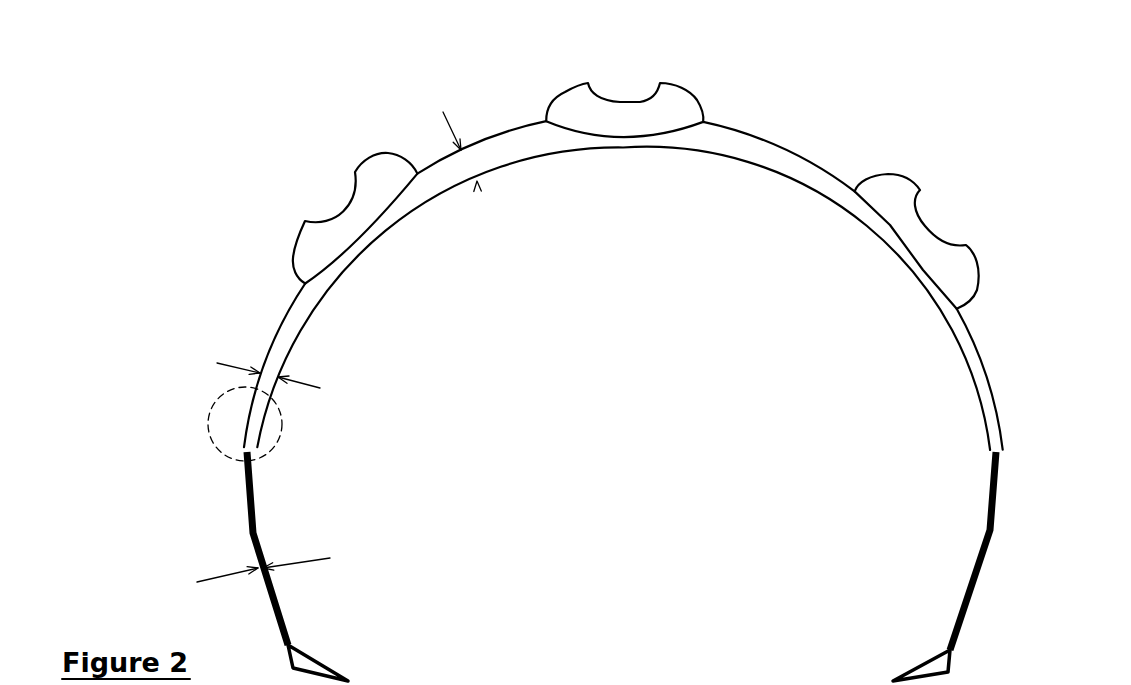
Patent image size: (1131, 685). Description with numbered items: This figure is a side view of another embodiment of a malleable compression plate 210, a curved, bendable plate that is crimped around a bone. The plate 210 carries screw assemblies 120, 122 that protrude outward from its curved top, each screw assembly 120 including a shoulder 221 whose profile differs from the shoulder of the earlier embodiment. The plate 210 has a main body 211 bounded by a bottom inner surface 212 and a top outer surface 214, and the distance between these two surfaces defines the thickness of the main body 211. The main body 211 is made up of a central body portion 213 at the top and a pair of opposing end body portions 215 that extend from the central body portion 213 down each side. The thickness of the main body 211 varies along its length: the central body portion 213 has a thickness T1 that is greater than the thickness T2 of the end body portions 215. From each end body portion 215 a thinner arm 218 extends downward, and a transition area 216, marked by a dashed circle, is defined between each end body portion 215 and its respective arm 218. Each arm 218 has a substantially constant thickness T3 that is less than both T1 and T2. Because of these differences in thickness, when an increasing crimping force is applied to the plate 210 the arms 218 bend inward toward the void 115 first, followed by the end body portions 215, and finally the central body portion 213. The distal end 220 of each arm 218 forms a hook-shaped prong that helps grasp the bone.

The malleable compression plate 210 is at (293, 112).
The screw assembly 120 is at (552, 104).
The cushion pad 122 is at (950, 217).
The shoulder 221 is at (982, 260).
The main body 211 is at (493, 157).
The bottom inner surface 212 is at (747, 162).
The central body portion 213 is at (740, 143).
The top outer surface 214 is at (829, 171).
The end body portion 215 is at (288, 323).
The transition area 216 is at (273, 443).
The arm 218 is at (247, 507).
The distal end 220 is at (312, 660).
The void 115 is at (662, 399).
The thickness of central body portion T1 is at (477, 181).
The thickness of end portions T2 is at (243, 369).
The thickness of arms T3 is at (210, 575).